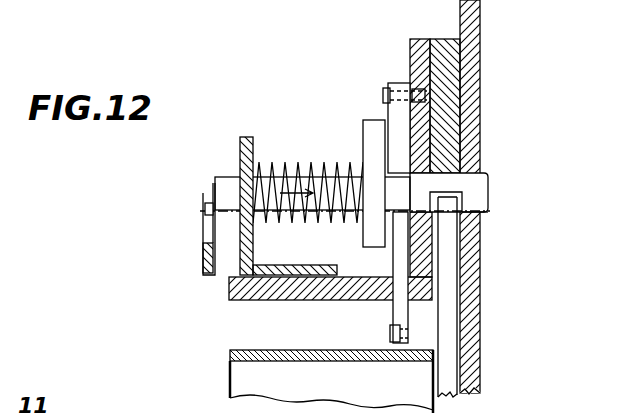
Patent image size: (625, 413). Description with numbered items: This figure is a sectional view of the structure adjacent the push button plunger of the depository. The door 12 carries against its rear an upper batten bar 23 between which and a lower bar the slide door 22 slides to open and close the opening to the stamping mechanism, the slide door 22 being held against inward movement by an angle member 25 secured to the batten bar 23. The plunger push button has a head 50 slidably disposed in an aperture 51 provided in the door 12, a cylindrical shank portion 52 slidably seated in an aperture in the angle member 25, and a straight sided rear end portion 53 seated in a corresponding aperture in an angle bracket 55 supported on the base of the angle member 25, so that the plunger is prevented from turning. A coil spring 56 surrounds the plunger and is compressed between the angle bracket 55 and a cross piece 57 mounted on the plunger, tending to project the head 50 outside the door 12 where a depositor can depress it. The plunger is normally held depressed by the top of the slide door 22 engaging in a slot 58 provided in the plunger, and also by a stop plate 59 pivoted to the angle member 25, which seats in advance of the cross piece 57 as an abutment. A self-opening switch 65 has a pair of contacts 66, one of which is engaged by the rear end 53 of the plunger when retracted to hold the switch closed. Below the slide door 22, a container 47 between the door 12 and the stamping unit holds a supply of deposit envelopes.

The door 12 is at (481, 17).
The upper batten bar 23 is at (438, 39).
The angle member 25 is at (411, 42).
The head 50 is at (484, 190).
The slot 58 is at (462, 194).
The aperture 51 is at (489, 212).
The slide door 22 is at (446, 272).
The straight sided rear end portion 53 is at (230, 179).
The cylindrical shank portion 52 is at (340, 178).
The coil spring 56 is at (289, 168).
The angle bracket 55 is at (245, 136).
The cross piece 57 is at (371, 125).
The stop plate 59 is at (395, 116).
The self-opening switch 65 is at (207, 240).
The contacts 66 is at (204, 208).
The container 47 is at (246, 375).